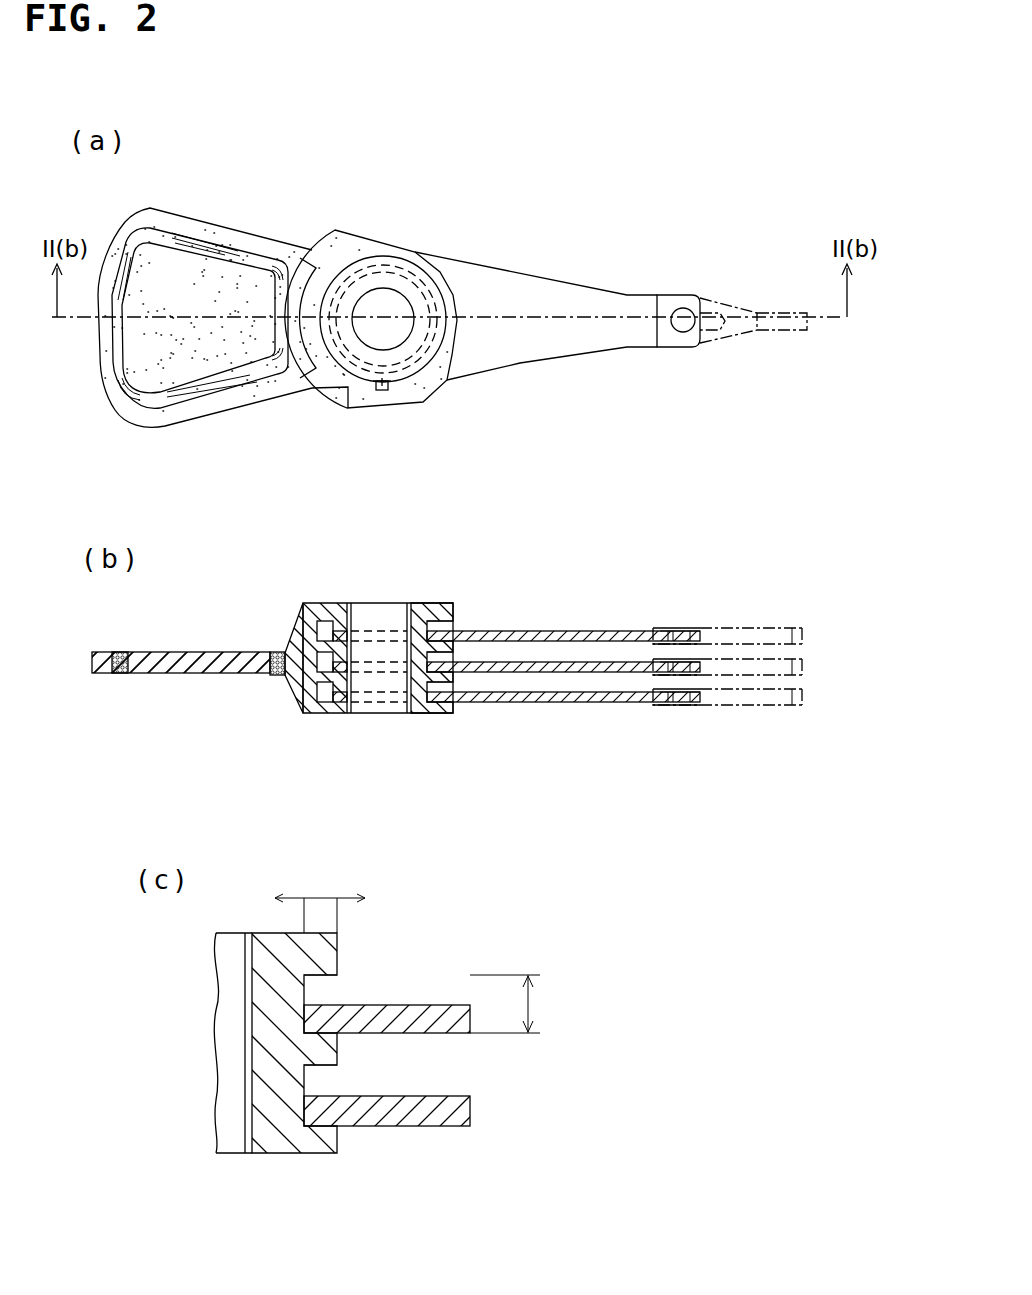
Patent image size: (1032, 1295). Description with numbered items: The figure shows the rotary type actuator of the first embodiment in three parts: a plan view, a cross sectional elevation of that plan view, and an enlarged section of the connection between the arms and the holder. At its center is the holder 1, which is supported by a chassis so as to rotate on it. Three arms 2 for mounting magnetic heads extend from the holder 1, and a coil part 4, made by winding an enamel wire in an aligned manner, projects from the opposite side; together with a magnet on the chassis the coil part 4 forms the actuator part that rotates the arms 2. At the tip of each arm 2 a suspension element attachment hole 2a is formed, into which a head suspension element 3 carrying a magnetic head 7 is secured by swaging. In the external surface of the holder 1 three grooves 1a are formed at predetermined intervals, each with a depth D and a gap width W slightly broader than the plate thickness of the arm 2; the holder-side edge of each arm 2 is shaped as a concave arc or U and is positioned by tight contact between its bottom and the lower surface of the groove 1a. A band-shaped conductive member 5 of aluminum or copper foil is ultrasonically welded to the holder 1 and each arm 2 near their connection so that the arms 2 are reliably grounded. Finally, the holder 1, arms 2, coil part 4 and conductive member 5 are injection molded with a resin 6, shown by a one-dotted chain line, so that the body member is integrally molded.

The holder 1 is at (440, 290).
The groove 1a is at (438, 718).
The arm 2 is at (544, 288).
The suspension element attachment hole 2a is at (683, 314).
The head suspension element 3 is at (742, 314).
The coil part 4 is at (214, 246).
The conductive member 5 is at (384, 392).
The resin 6 is at (348, 243).
The magnetic head 7 is at (800, 332).